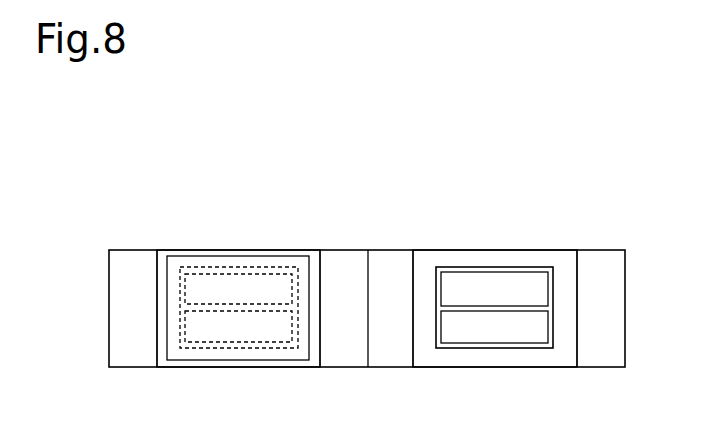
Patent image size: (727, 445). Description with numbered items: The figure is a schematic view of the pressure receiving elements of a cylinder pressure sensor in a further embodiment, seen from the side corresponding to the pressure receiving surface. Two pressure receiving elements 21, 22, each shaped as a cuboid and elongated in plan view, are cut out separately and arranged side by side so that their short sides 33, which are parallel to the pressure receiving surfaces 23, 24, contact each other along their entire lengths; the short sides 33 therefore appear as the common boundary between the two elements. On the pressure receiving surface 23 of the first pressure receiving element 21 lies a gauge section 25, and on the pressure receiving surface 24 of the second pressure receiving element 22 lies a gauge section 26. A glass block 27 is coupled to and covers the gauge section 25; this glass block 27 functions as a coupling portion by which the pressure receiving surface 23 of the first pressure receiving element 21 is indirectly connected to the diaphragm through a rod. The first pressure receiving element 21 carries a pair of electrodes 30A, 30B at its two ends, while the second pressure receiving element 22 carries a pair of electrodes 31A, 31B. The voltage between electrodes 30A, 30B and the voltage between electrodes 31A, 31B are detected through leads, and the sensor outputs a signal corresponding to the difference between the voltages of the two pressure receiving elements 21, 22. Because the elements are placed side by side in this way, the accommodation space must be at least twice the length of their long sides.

The first pressure receiving element 21 is at (192, 213).
The second pressure receiving element 22 is at (442, 213).
The pressure receiving surface 23 is at (162, 355).
The pressure receiving surface 24 is at (460, 357).
The gauge section 25 is at (253, 350).
The gauge section 26 is at (502, 350).
The glass block 27 is at (217, 355).
The electrode 30A is at (335, 356).
The electrode 30B is at (123, 360).
The electrode 31A is at (593, 357).
The electrode 31B is at (395, 356).
The short sides 33 is at (368, 288).